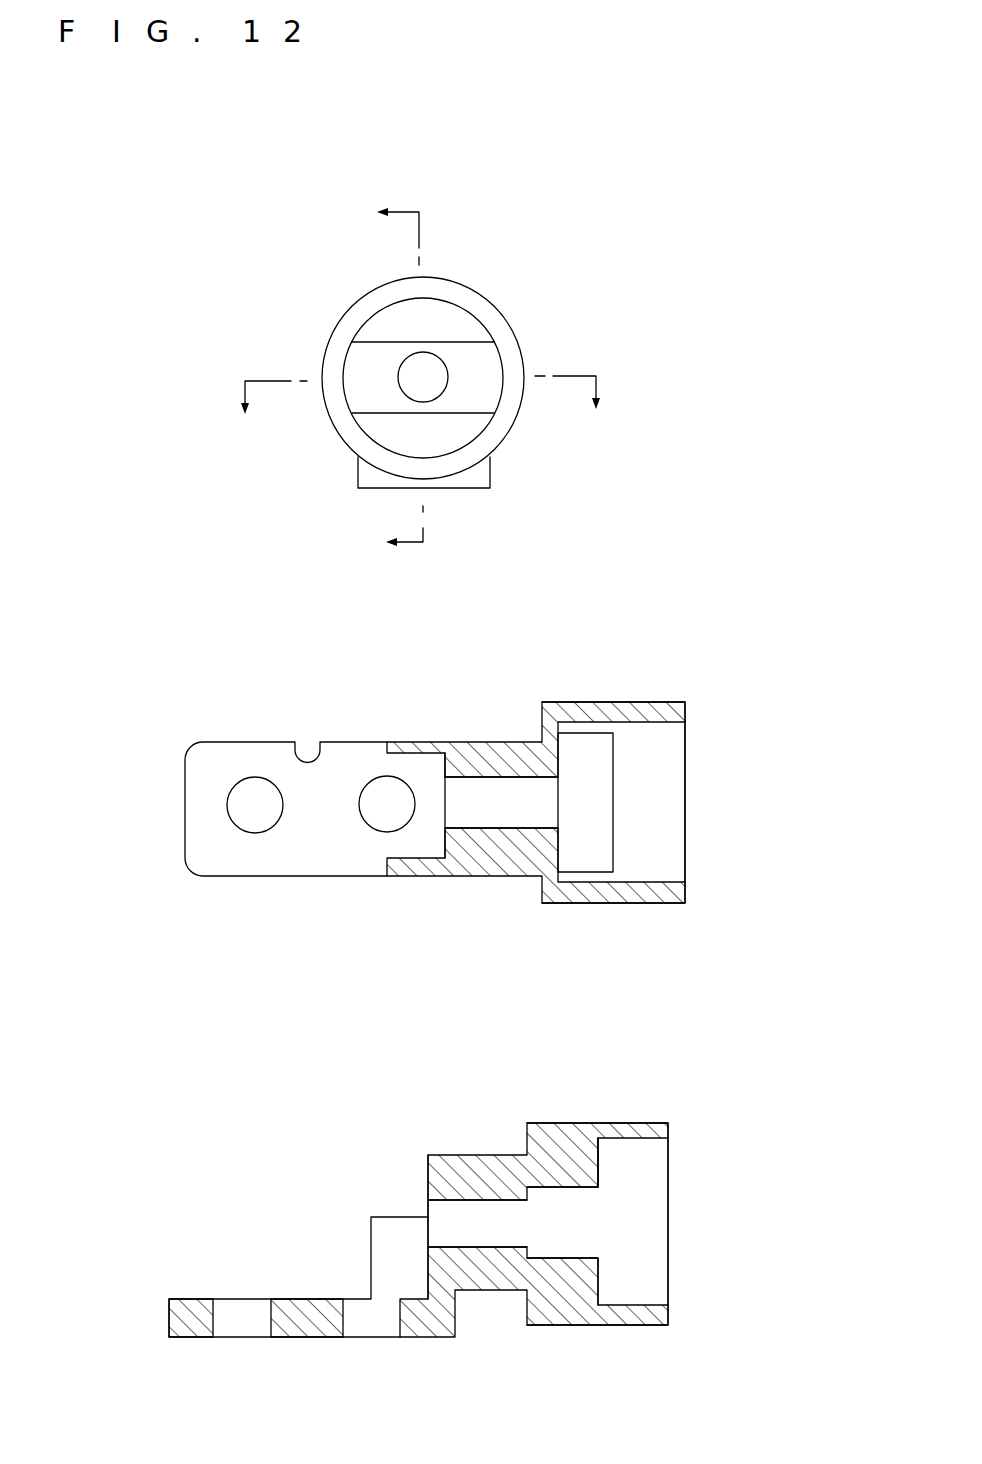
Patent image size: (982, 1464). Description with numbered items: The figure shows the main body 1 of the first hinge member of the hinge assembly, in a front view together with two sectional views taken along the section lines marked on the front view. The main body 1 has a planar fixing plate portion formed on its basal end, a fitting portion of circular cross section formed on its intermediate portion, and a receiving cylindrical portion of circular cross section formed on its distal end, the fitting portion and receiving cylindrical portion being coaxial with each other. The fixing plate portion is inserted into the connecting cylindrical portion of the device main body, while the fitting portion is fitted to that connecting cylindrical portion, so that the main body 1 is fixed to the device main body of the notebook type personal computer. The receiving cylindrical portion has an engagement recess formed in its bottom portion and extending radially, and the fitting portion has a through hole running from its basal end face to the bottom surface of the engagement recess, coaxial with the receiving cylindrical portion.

The main body 1 is at (445, 763).